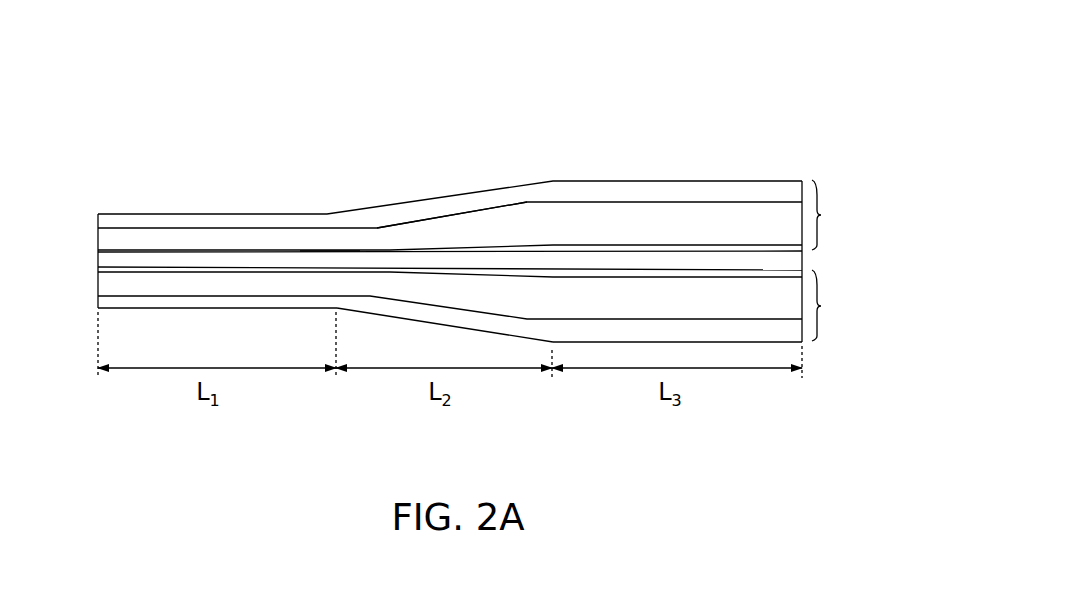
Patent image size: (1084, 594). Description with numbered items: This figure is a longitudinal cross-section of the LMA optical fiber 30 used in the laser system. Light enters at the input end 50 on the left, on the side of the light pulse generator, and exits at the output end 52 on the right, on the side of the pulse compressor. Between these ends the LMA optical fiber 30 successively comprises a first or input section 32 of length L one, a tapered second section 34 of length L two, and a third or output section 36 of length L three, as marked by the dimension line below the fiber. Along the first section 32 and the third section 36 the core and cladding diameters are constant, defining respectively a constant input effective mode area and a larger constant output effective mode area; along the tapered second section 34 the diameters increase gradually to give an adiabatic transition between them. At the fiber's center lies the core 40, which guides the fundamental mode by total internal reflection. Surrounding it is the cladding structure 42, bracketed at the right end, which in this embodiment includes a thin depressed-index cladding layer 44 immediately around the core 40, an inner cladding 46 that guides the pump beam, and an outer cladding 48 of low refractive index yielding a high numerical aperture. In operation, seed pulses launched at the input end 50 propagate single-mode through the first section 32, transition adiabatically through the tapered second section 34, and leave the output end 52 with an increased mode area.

The LMA optical fiber 30 is at (799, 140).
The first or input section 32 is at (188, 309).
The tapered second section 34 is at (485, 332).
The third or output section 36 is at (736, 343).
The core 40 is at (205, 250).
The cladding structure 42 is at (821, 306).
The depressed-index cladding layer 44 is at (327, 250).
The inner cladding 46 is at (459, 212).
The outer cladding 48 is at (610, 180).
The input end 50 is at (76, 235).
The output end 52 is at (880, 274).